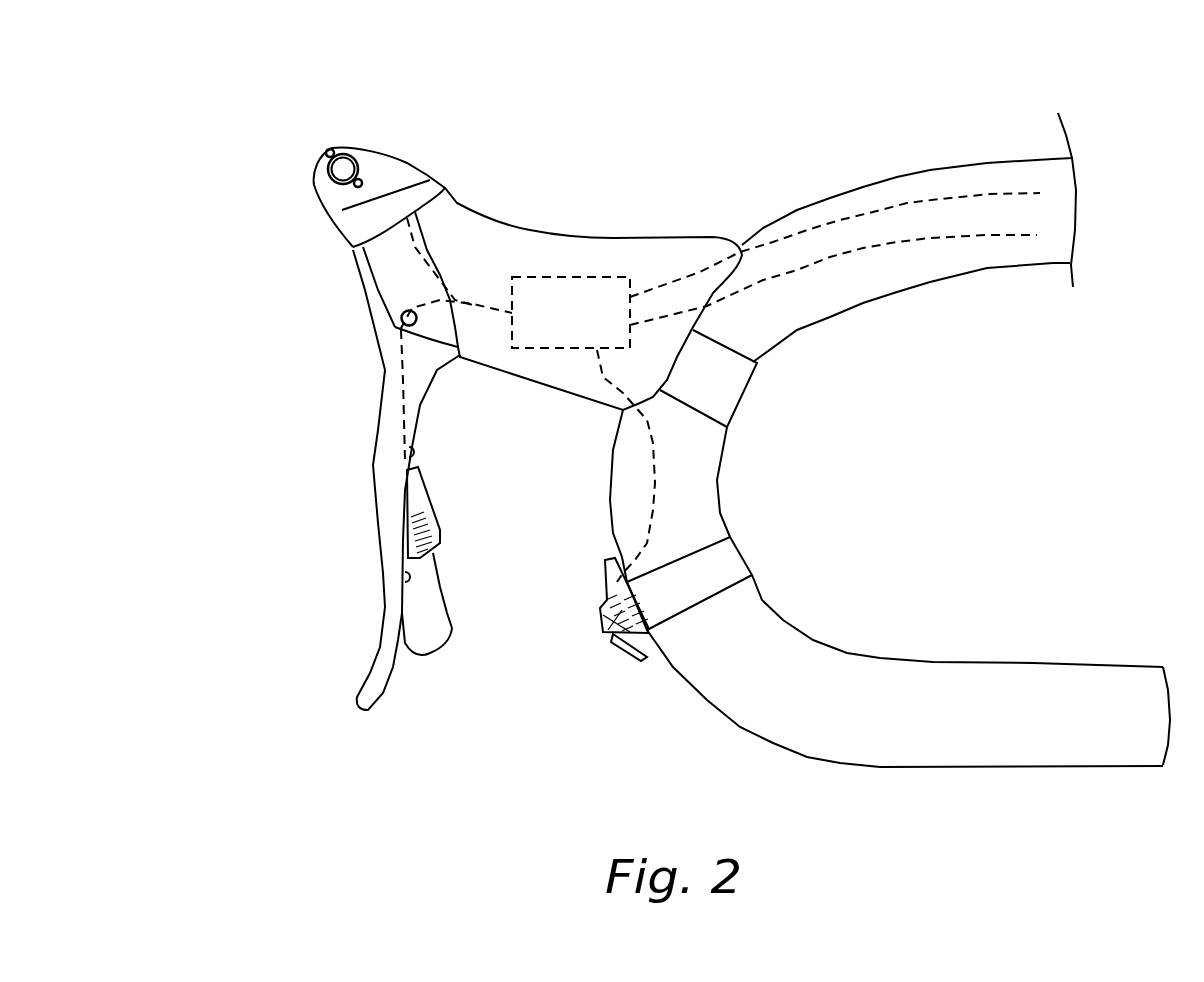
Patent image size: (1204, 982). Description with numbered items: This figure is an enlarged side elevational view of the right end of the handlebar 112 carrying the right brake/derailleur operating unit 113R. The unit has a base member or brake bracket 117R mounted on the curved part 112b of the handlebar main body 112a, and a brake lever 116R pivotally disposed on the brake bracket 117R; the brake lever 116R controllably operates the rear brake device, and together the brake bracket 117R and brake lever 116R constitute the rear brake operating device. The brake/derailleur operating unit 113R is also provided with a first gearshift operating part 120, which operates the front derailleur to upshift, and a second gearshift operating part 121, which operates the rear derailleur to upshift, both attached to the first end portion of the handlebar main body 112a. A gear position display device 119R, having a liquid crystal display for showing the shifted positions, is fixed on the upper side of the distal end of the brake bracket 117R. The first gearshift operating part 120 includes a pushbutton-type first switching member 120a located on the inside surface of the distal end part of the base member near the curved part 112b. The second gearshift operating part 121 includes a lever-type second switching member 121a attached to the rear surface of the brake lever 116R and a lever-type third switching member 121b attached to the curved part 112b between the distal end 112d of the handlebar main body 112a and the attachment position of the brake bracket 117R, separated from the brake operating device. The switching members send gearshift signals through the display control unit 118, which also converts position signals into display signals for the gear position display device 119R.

The handlebar 112 is at (825, 440).
The handlebar main body 112a is at (835, 193).
The curved part 112b is at (605, 496).
The distal end 112d is at (908, 714).
The brake/derailleur operating unit 113R is at (670, 350).
The brake lever 116R is at (351, 480).
The brake bracket 117R is at (528, 362).
The display control unit 118 is at (565, 234).
The gear position display device 119R is at (443, 180).
The first gearshift operating part 120 is at (381, 117).
The first switching member 120a is at (311, 119).
The second gearshift operating part 121 is at (530, 636).
The second switching member 121a is at (469, 603).
The third switching member 121b is at (618, 649).